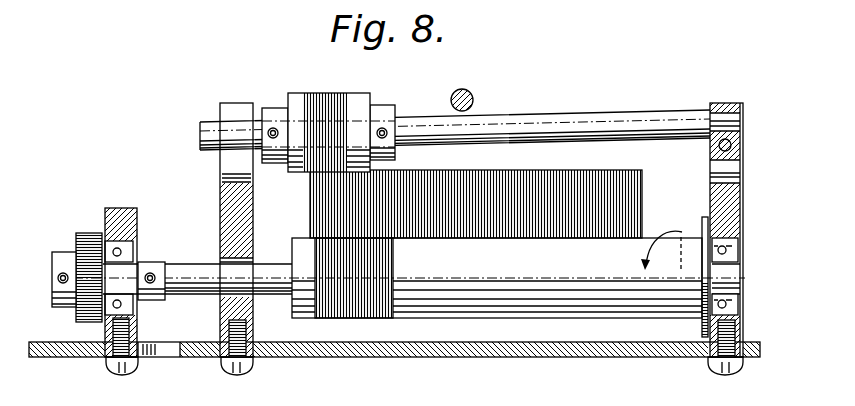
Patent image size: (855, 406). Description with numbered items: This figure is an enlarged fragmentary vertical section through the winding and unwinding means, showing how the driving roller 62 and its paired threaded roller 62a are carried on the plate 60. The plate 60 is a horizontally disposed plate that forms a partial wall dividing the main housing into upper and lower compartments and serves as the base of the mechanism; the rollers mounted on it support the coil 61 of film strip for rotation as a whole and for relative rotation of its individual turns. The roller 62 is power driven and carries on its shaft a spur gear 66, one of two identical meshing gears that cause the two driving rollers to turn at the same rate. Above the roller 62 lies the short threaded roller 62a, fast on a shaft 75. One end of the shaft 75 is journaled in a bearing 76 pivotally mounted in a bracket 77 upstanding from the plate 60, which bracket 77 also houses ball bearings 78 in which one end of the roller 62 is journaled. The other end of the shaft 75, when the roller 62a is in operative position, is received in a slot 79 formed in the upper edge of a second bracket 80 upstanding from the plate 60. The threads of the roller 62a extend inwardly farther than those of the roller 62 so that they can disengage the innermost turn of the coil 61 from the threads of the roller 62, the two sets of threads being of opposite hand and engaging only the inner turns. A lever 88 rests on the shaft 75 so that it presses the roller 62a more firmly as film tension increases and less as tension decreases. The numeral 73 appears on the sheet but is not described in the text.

The plate 60 is at (681, 352).
The coil 61 is at (643, 195).
The driving roller 62 is at (575, 272).
The threaded roller 62a is at (362, 104).
The spur gear 66 is at (90, 233).
The reference numeral (partial) 73 is at (20, 7).
The shaft 75 is at (633, 122).
The bearing 76 is at (743, 148).
The bracket 77 is at (741, 205).
The ball bearings 78 is at (741, 228).
The slot 79 is at (231, 183).
The bracket 80 is at (245, 214).
The lever 88 is at (472, 94).